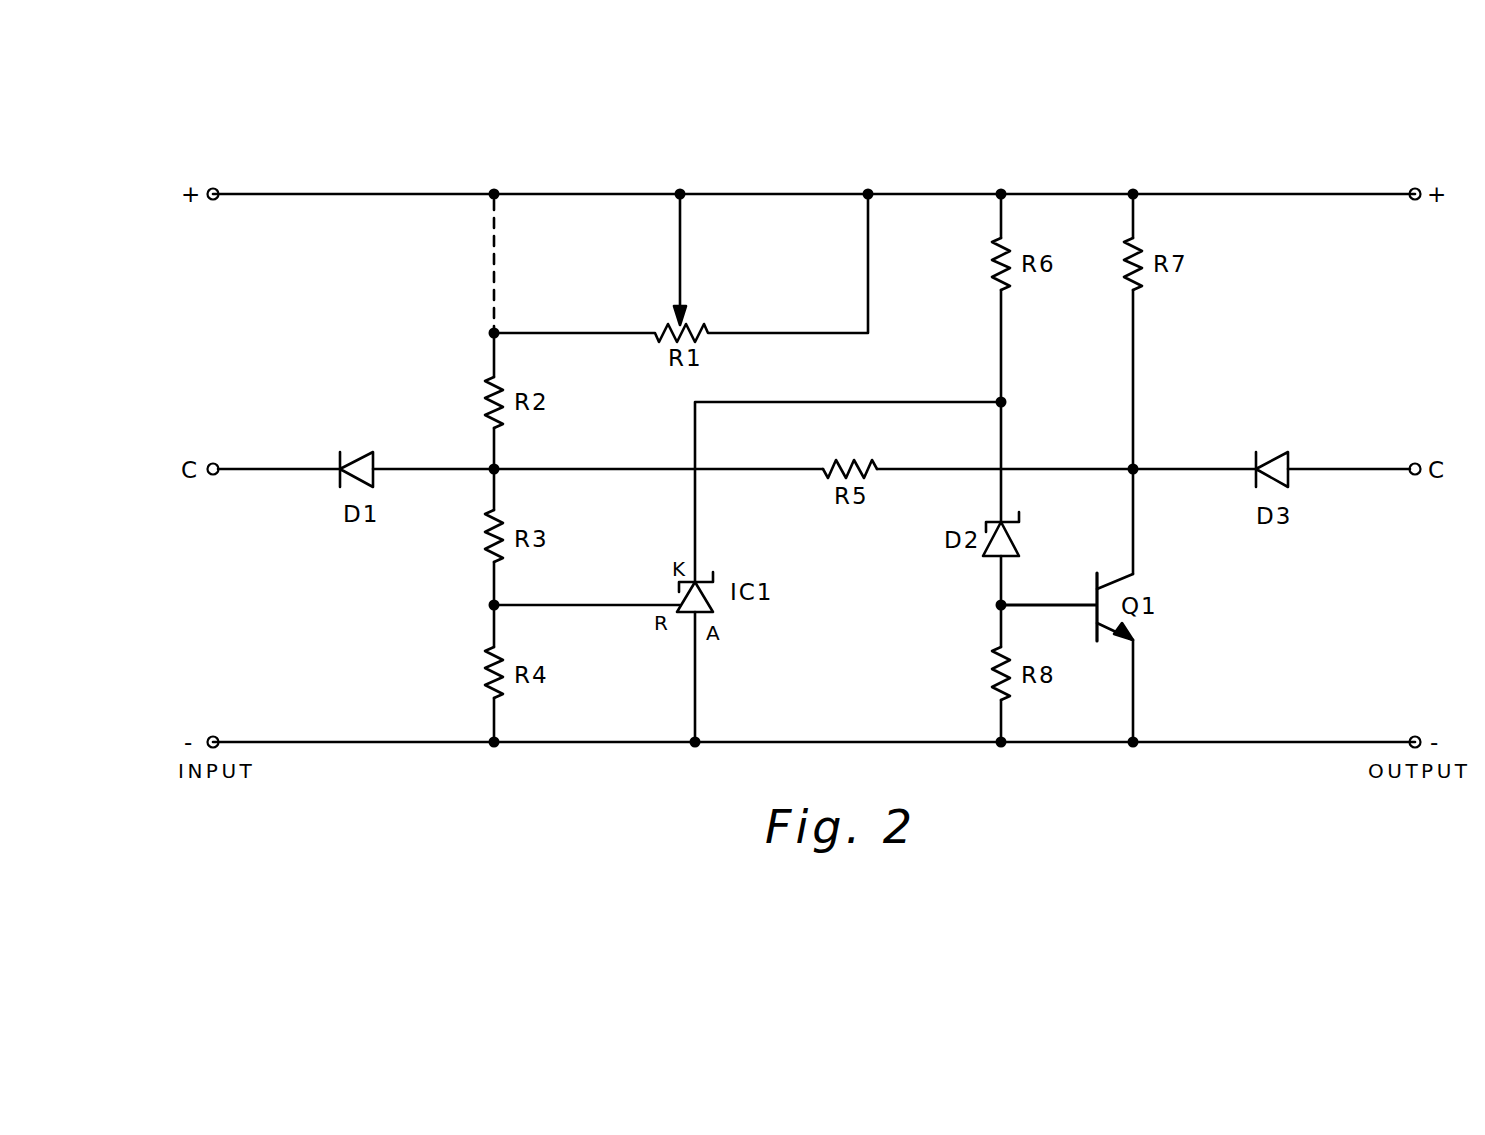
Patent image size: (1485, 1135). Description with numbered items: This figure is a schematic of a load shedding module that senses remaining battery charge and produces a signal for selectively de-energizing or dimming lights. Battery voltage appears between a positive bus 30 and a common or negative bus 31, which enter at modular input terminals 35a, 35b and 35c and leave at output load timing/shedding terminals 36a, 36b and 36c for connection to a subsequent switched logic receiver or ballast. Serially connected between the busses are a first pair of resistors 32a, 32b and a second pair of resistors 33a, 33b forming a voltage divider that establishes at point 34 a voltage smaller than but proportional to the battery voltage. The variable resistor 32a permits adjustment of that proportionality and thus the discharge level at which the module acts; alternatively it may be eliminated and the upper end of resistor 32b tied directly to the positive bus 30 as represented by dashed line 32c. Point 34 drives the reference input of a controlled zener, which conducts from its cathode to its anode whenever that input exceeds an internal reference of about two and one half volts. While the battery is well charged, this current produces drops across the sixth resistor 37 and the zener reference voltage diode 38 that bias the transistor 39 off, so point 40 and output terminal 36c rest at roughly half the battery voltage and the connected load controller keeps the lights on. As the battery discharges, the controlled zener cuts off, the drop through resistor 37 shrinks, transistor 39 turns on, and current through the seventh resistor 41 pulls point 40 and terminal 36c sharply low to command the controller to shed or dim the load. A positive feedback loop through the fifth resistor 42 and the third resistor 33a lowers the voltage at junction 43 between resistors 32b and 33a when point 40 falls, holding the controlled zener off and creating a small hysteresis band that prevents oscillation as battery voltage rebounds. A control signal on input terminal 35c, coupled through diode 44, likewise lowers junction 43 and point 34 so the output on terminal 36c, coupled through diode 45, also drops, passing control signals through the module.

The positive bus 30 is at (314, 194).
The common bus 31 is at (314, 742).
The variable resistor 32a is at (655, 328).
The resistor 32b is at (494, 382).
The dashed line connection 32c is at (493, 267).
The resistor 33a is at (494, 518).
The resistor 33b is at (494, 653).
The point 34 is at (497, 604).
The input terminal 35a is at (213, 200).
The input terminal 35b is at (212, 738).
The input terminal 35c is at (212, 475).
The output terminal 36a is at (1415, 200).
The output terminal 36b is at (1417, 737).
The output terminal 36c is at (1416, 476).
The R6 resistor 37 is at (1001, 249).
The zener reference voltage diode 38 is at (1014, 545).
The Q1 transistor 39 is at (1112, 594).
The point 40 is at (1136, 467).
The R7 resistor 41 is at (1133, 249).
The R5 resistor 42 is at (823, 466).
The junction 43 is at (497, 468).
The diode 44 is at (373, 462).
The diode 45 is at (1289, 462).